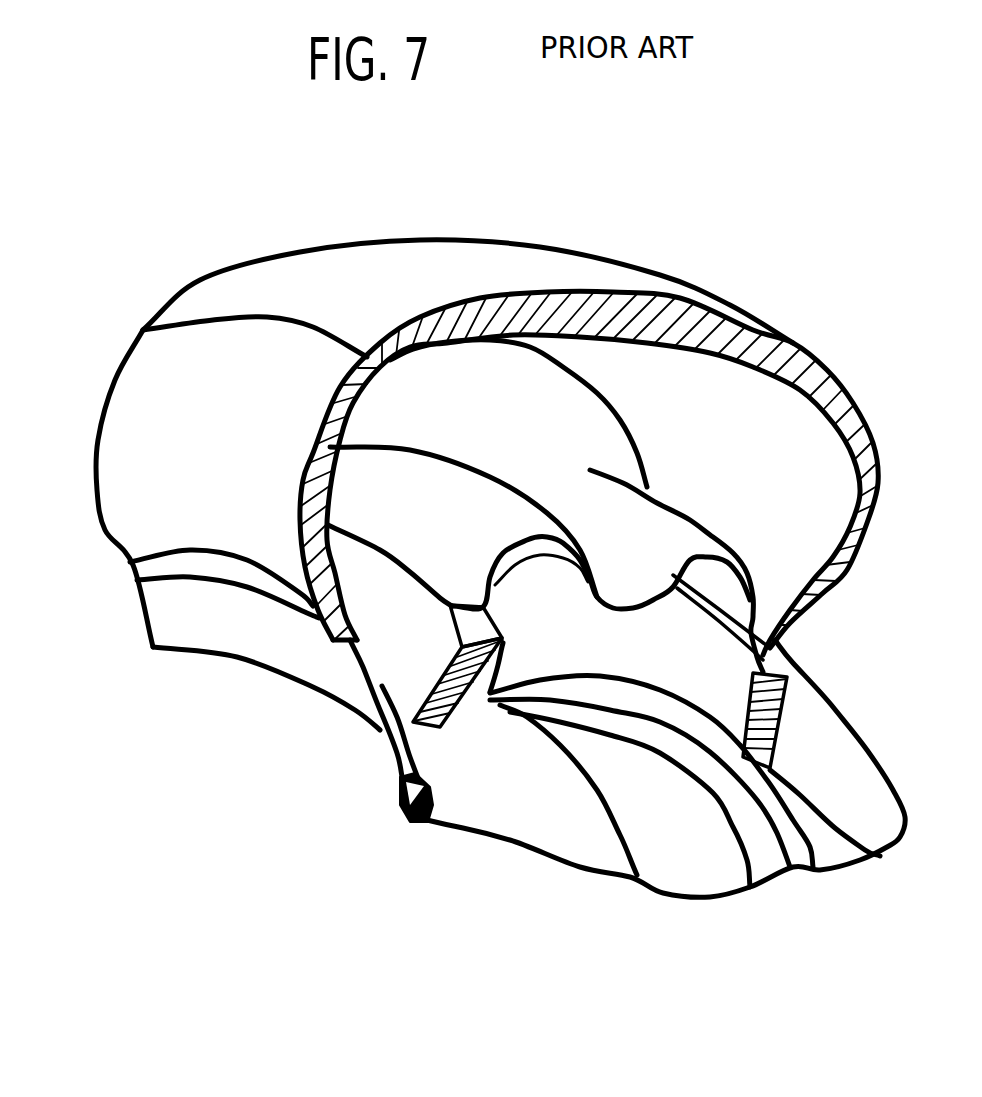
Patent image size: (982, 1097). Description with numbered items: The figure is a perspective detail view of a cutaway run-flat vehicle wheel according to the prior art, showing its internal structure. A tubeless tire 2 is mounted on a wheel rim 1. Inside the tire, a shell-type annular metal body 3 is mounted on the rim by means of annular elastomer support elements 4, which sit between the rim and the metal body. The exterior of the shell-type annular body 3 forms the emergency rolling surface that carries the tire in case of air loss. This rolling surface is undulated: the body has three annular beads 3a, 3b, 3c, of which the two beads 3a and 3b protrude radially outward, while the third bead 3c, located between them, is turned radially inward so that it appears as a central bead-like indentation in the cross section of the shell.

The wheel rim 1 is at (647, 787).
The tubeless tire 2 is at (205, 435).
The shell-type annular metal body 3 is at (467, 497).
The annular bead 3a is at (420, 503).
The annular bead 3b is at (707, 527).
The annular bead 3c is at (623, 597).
The annular elastomer support elements 4 is at (402, 653).